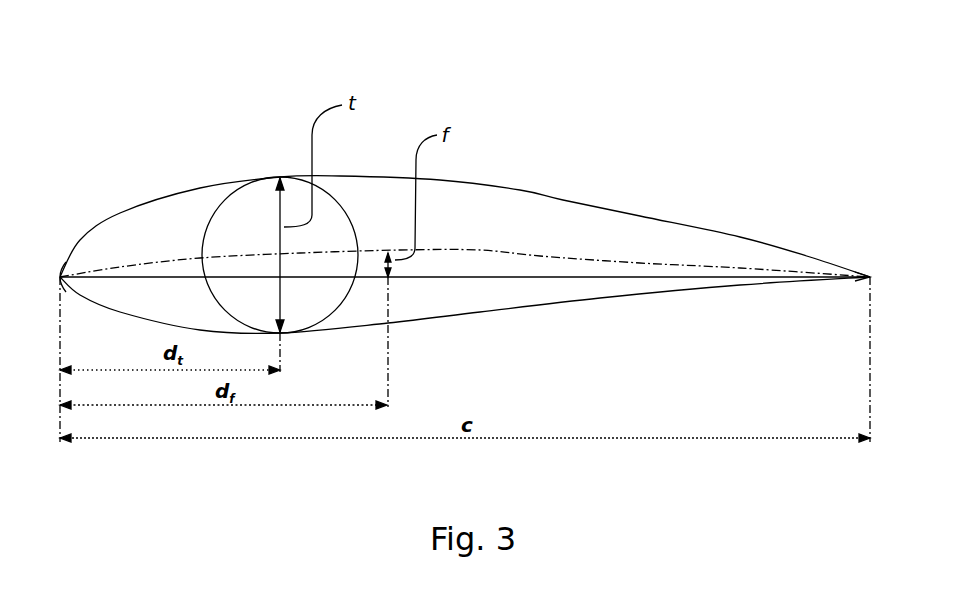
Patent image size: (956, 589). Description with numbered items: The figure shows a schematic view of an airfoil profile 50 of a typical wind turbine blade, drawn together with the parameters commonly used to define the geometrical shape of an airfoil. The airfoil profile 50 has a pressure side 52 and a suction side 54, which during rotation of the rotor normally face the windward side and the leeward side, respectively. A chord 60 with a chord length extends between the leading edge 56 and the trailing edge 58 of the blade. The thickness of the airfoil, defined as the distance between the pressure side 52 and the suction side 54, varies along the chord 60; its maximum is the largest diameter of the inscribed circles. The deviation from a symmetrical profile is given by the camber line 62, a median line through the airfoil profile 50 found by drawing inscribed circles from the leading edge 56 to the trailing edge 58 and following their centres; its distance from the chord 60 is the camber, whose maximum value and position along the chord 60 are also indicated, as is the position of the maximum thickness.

The airfoil profile 50 is at (441, 96).
The pressure side 52 is at (623, 305).
The suction side 54 is at (563, 193).
The leading edge 56 is at (60, 277).
The trailing edge 58 is at (870, 277).
The chord 60 is at (663, 275).
The camber line 62 is at (455, 250).